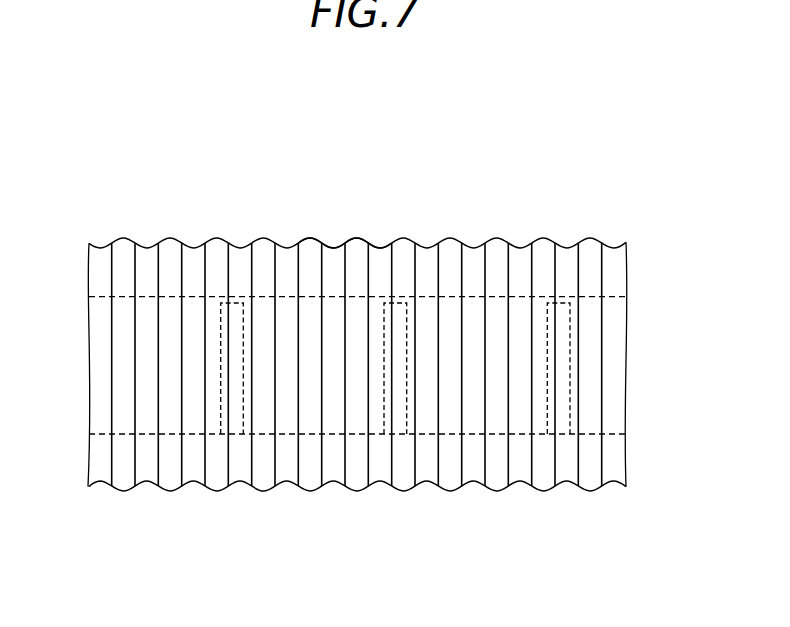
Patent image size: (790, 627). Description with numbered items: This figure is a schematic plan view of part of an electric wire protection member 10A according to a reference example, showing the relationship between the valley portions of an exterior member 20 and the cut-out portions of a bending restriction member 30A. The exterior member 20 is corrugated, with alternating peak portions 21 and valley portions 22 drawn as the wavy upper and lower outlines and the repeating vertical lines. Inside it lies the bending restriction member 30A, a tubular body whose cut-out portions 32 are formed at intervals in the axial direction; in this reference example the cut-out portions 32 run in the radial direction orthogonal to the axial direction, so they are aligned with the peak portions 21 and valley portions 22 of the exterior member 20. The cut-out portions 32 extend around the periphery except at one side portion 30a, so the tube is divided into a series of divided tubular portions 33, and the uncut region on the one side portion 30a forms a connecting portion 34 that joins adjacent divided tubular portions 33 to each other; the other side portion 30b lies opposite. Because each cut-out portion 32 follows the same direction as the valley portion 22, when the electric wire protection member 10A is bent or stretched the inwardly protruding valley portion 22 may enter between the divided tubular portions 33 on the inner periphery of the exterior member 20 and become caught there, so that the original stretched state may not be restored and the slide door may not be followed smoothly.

The electric wire protection member 10A is at (516, 178).
The exterior member 20 is at (546, 237).
The peak portion 21 is at (356, 238).
The valley portion 22 is at (380, 247).
The one side portion 30a is at (172, 292).
The other side portion 30b is at (120, 437).
The bending restriction member 30A is at (596, 442).
The cut-out portion 32 is at (562, 440).
The divided tubular portion 33 is at (503, 437).
The connecting portion 34 is at (563, 302).